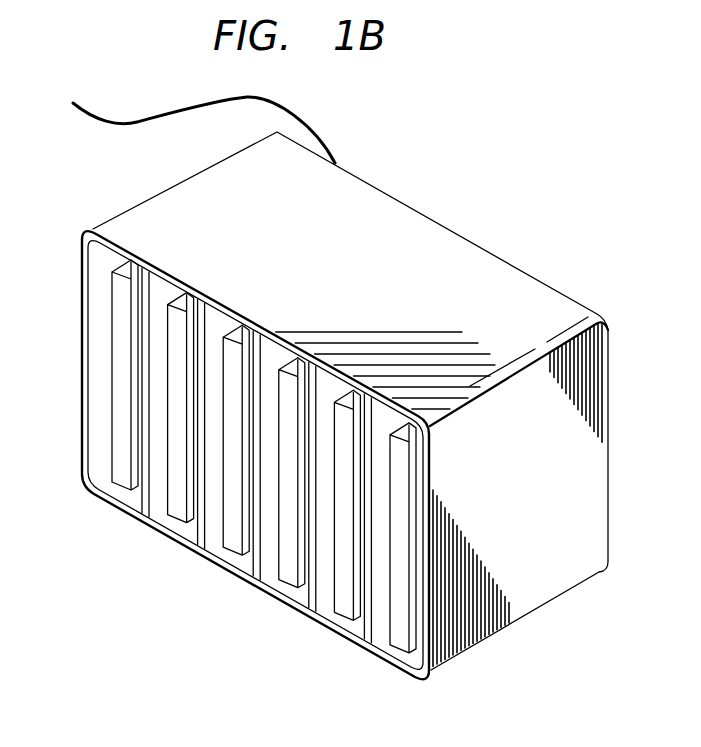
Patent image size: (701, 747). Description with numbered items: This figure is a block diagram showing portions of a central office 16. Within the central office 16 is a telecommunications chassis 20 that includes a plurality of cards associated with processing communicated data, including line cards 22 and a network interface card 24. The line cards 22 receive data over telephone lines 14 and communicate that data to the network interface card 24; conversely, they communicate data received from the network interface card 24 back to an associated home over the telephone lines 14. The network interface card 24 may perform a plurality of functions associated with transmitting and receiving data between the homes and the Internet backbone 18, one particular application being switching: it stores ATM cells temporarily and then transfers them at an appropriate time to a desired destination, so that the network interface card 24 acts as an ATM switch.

The telephone lines 14 is at (440, 223).
The central office 16 is at (542, 153).
The Internet backbone 18 is at (175, 118).
The telecommunications chassis 20 is at (306, 320).
The line cards 22 is at (117, 500).
The network interface card 24 is at (230, 562).